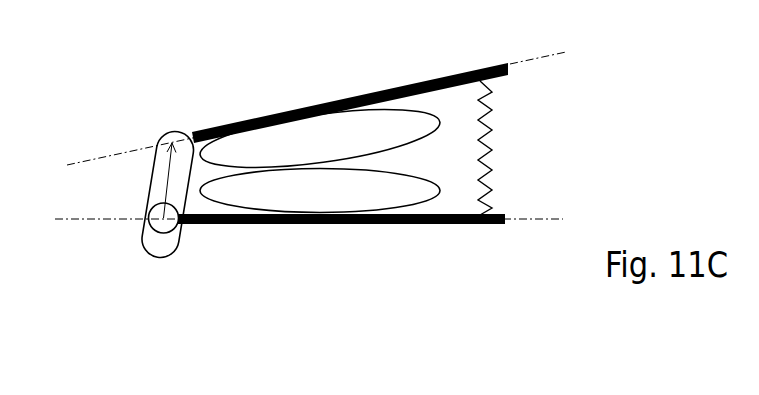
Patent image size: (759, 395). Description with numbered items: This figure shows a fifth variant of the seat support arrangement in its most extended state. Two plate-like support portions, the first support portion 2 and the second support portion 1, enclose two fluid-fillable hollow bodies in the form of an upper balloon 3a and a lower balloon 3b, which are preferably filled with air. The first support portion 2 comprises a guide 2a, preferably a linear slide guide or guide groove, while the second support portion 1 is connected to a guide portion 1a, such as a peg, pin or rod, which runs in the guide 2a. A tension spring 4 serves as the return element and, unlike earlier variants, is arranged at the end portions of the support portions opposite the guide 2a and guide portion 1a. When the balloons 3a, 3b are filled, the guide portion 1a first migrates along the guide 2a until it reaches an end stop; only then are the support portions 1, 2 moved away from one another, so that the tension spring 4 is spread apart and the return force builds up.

The second support portion 1 is at (390, 225).
The guide portion 1a is at (173, 227).
The first support portion 2 is at (394, 89).
The guide 2a is at (155, 165).
The balloon 3a is at (440, 122).
The balloon 3b is at (442, 190).
The tension spring 4 is at (492, 92).